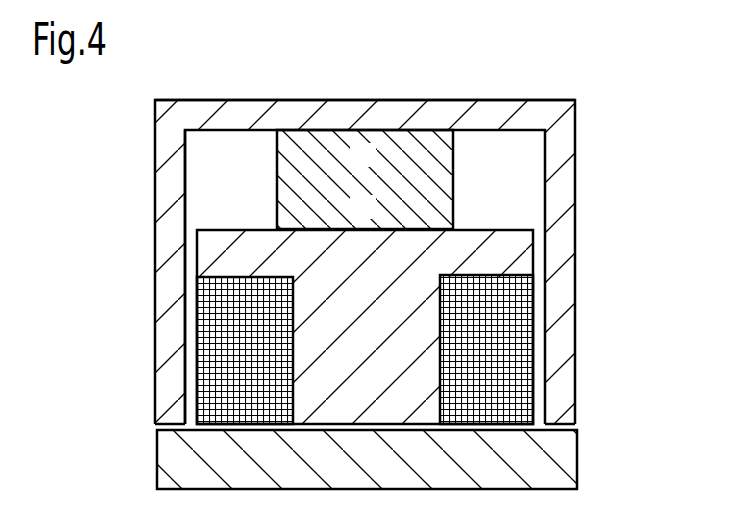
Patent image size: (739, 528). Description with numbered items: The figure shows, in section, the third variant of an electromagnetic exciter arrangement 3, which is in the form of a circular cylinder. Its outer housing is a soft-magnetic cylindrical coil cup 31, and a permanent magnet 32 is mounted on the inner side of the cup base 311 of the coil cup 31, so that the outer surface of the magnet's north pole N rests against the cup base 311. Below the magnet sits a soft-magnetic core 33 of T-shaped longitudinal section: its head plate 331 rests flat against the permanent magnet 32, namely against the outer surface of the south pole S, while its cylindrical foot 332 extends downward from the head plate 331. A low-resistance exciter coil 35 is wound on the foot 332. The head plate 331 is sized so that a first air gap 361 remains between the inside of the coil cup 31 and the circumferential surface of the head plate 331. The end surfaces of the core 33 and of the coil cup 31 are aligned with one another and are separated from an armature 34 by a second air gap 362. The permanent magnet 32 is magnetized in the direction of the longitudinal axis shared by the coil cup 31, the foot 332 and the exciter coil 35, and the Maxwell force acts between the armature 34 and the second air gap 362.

The electromagnetic exciter arrangement 3 is at (375, 34).
The coil cup 31 is at (162, 202).
The cup base 311 is at (463, 105).
The permanent magnet 32 is at (443, 187).
The core 33 is at (427, 313).
The head plate 331 is at (508, 260).
The foot 332 is at (430, 325).
The armature 34 is at (568, 453).
The exciter coil 35 is at (527, 372).
The first air gap 361 is at (196, 207).
The second air gap 362 is at (146, 428).